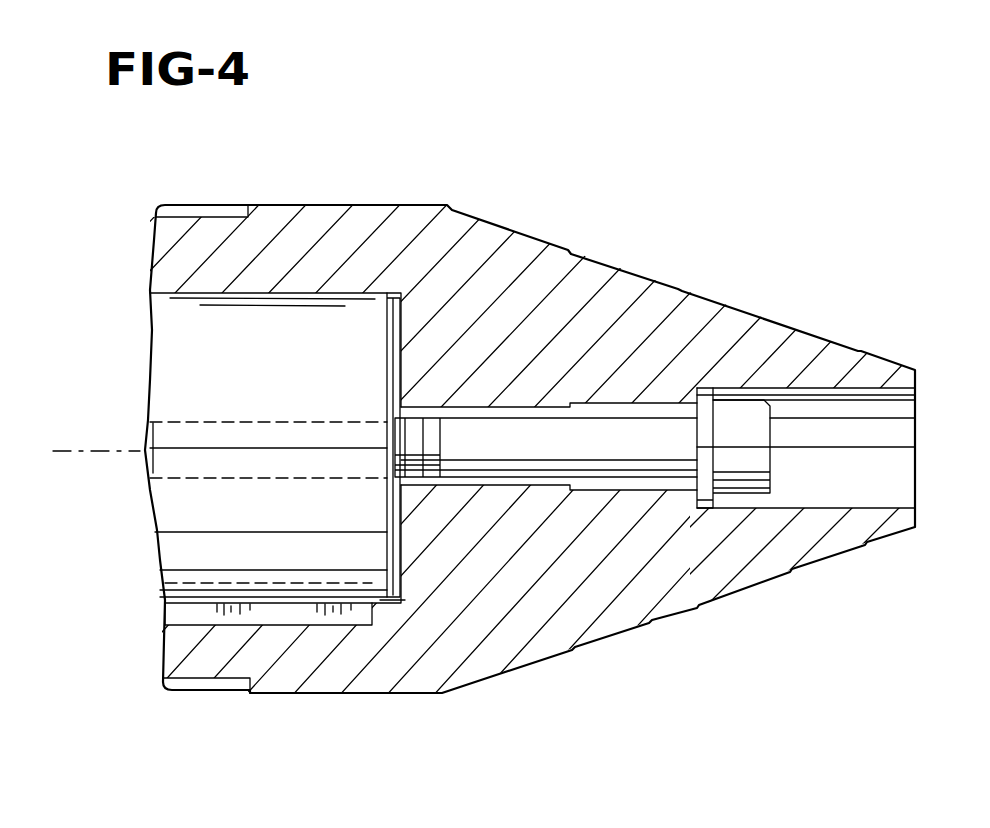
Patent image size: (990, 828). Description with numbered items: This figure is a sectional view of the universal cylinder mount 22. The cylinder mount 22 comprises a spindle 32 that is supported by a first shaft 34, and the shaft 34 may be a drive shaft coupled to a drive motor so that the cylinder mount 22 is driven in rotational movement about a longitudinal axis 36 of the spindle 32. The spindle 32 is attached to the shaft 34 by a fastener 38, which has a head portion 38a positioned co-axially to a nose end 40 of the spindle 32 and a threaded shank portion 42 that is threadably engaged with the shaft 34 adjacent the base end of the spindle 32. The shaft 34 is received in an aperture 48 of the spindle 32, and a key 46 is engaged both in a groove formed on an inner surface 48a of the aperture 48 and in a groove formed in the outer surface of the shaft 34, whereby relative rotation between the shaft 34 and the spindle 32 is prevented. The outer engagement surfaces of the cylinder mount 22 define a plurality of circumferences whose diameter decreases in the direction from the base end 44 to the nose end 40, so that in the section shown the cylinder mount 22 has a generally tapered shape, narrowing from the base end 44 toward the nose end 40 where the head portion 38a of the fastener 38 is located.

The universal cylinder mount 22 is at (274, 217).
The spindle 32 is at (567, 246).
The first shaft 34 is at (173, 322).
The longitudinal axis 36 is at (73, 452).
The fastener 38 is at (632, 417).
The head portion 38a is at (740, 423).
The nose end 40 is at (868, 390).
The threaded shank portion 42 is at (353, 415).
The base end 44 is at (192, 212).
The key 46 is at (280, 627).
The aperture 48 is at (400, 583).
The inner surface 48a is at (395, 603).